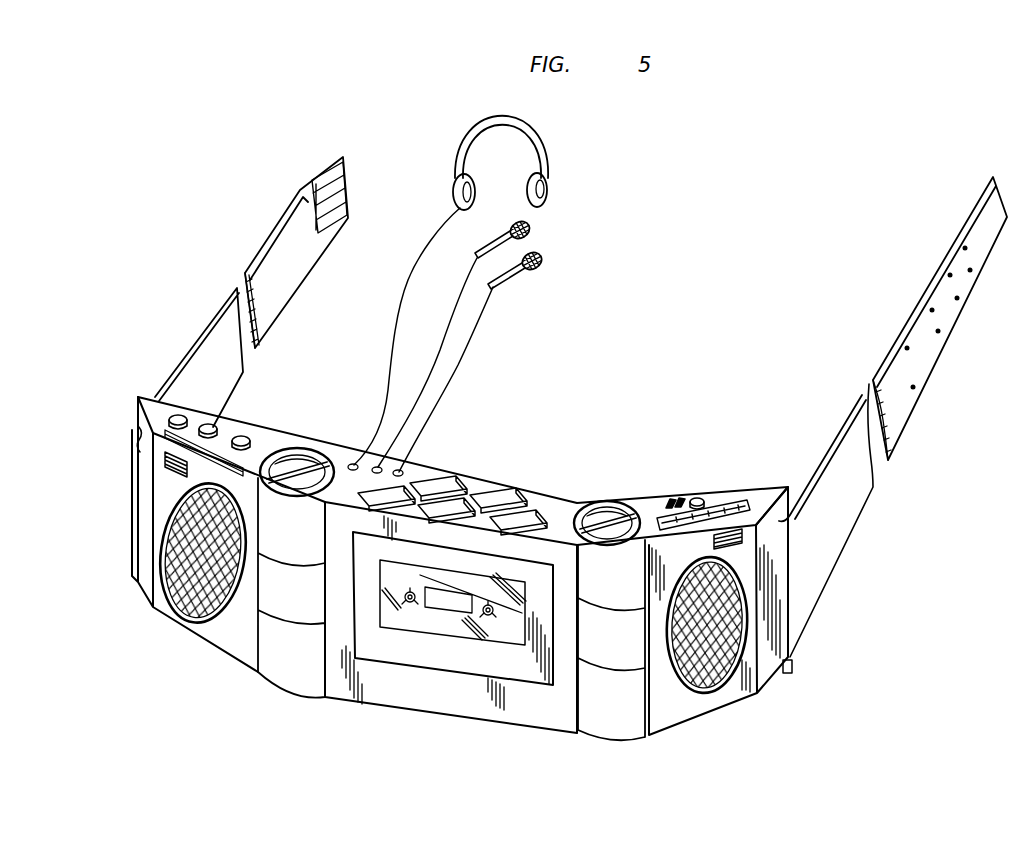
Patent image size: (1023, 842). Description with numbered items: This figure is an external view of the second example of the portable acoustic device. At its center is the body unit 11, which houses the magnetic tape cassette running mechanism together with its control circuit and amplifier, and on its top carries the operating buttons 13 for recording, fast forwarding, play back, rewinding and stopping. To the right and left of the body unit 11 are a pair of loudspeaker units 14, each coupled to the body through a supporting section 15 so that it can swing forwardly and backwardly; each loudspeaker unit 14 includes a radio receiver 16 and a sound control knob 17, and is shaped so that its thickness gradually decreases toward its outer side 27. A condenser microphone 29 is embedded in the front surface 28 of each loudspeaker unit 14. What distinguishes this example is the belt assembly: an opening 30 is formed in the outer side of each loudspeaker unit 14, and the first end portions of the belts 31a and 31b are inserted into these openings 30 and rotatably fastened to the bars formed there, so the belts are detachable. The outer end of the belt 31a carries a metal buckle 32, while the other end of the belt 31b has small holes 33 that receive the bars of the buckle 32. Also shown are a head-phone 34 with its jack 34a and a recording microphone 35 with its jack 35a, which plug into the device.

The body unit 11 is at (548, 496).
The operating buttons 13 is at (446, 486).
The loudspeaker unit 14 is at (268, 443).
The supporting section 15 is at (284, 690).
The radio receiver 16 is at (708, 502).
The sound control knob 17 is at (242, 437).
The outer side 27 is at (148, 400).
The front surface 28 is at (163, 608).
The condenser microphone 29 is at (170, 462).
The opening 30 is at (138, 426).
The belt 31a is at (225, 306).
The belt 31b is at (904, 330).
The metal buckle 32 is at (352, 192).
The holes 33 is at (934, 311).
The head-phone 34 is at (549, 160).
The head-phone jack 34a is at (352, 465).
The recording microphone 35 is at (505, 236).
The recording microphone jack 35a is at (400, 470).